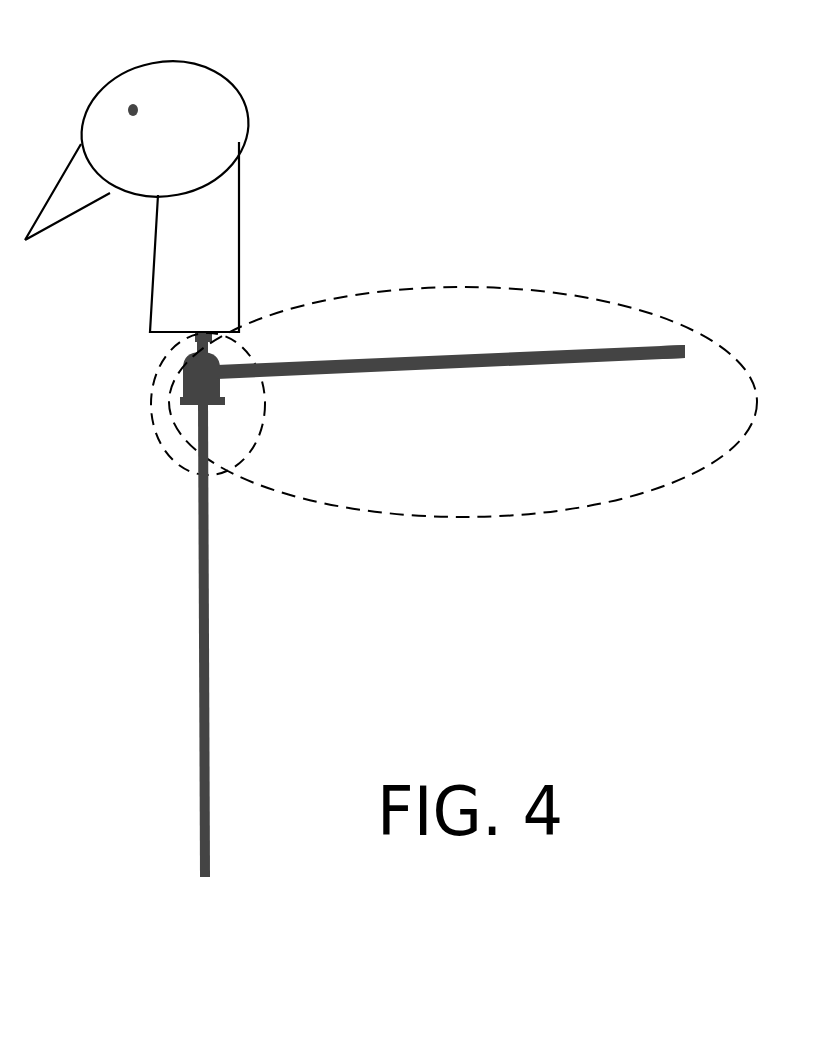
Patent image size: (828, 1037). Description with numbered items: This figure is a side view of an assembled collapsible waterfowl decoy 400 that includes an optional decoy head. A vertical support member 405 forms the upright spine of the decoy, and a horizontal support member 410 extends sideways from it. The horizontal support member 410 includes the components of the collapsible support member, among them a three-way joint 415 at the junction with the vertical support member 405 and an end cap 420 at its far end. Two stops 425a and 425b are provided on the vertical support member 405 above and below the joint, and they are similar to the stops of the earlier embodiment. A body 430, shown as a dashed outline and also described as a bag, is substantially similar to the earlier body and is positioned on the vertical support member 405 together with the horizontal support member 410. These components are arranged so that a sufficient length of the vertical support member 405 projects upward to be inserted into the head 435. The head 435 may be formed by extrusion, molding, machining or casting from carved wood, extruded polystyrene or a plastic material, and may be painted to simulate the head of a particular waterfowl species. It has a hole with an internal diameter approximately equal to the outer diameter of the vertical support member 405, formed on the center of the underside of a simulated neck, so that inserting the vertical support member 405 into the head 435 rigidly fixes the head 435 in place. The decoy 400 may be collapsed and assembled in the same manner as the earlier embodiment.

The assembled collapsible waterfowl decoy 400 is at (480, 58).
The vertical support member 405 is at (193, 680).
The horizontal support member 410 is at (432, 354).
The three-way joint 415 is at (183, 392).
The end cap 420 is at (677, 359).
The stop 425a is at (212, 332).
The stop 425b is at (195, 415).
The body 430 is at (627, 310).
The head 435 is at (236, 77).